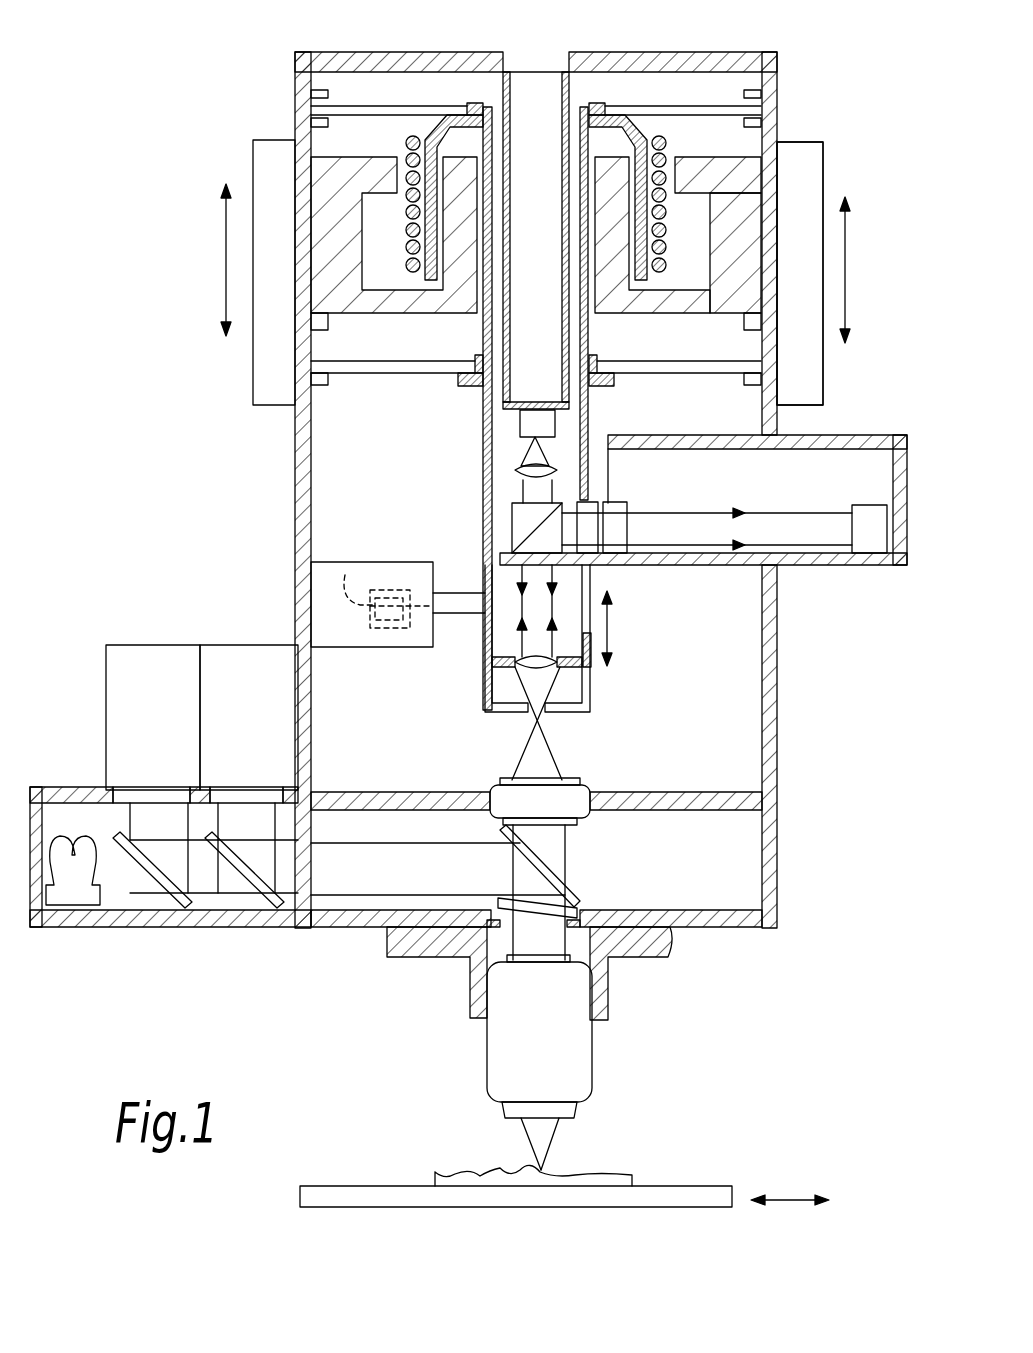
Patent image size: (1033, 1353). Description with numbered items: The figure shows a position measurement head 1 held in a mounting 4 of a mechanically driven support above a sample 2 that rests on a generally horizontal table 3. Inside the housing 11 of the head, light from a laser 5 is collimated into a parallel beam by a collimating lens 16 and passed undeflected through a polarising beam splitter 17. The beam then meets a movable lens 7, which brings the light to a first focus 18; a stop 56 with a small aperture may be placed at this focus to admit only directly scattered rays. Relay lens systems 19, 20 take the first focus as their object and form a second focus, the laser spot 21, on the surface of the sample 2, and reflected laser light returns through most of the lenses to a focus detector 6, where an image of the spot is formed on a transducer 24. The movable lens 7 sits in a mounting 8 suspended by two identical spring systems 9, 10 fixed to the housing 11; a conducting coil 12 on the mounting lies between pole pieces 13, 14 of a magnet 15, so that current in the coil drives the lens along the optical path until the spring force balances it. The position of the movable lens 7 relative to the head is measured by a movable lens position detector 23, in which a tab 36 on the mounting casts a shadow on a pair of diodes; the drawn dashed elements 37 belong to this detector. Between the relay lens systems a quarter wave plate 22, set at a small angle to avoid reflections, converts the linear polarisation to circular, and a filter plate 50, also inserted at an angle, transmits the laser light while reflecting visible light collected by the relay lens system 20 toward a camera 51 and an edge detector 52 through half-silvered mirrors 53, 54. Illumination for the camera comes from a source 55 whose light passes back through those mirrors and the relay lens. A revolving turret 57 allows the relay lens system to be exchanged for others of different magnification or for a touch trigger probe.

The position measurement head 1 is at (800, 643).
The sample 2 is at (630, 1175).
The table 3 is at (660, 1208).
The mounting 4 is at (823, 170).
The laser 5 is at (517, 422).
The focus detector 6 is at (803, 587).
The movable lens 7 is at (555, 667).
The mounting 8 is at (497, 468).
The spring system 9 is at (365, 375).
The spring system 10 is at (388, 112).
The housing 11 is at (300, 520).
The conducting coil 12 is at (664, 148).
The pole piece 13 is at (752, 178).
The pole piece 14 is at (727, 295).
The magnet 15 is at (750, 248).
The collimating lens 16 is at (453, 445).
The polarising beam splitter 17 is at (510, 528).
The first focus 18 is at (548, 717).
The relay lens system 19 is at (585, 822).
The relay lens system 20 is at (592, 1062).
The laser spot 21 is at (543, 1170).
The quarter wave plate 22 is at (515, 920).
The movable lens position detector 23 is at (400, 646).
The transducer 24 is at (868, 540).
The tab 36 is at (350, 590).
The sensor element 37 is at (378, 580).
The filter plate 50 is at (510, 865).
The camera 51 is at (238, 650).
The edge detector 52 is at (135, 650).
The half-silvered mirror 53 is at (240, 905).
The half-silvered mirror 54 is at (160, 905).
The source 55 is at (63, 905).
The stop 56 is at (500, 712).
The revolving turret 57 is at (385, 958).